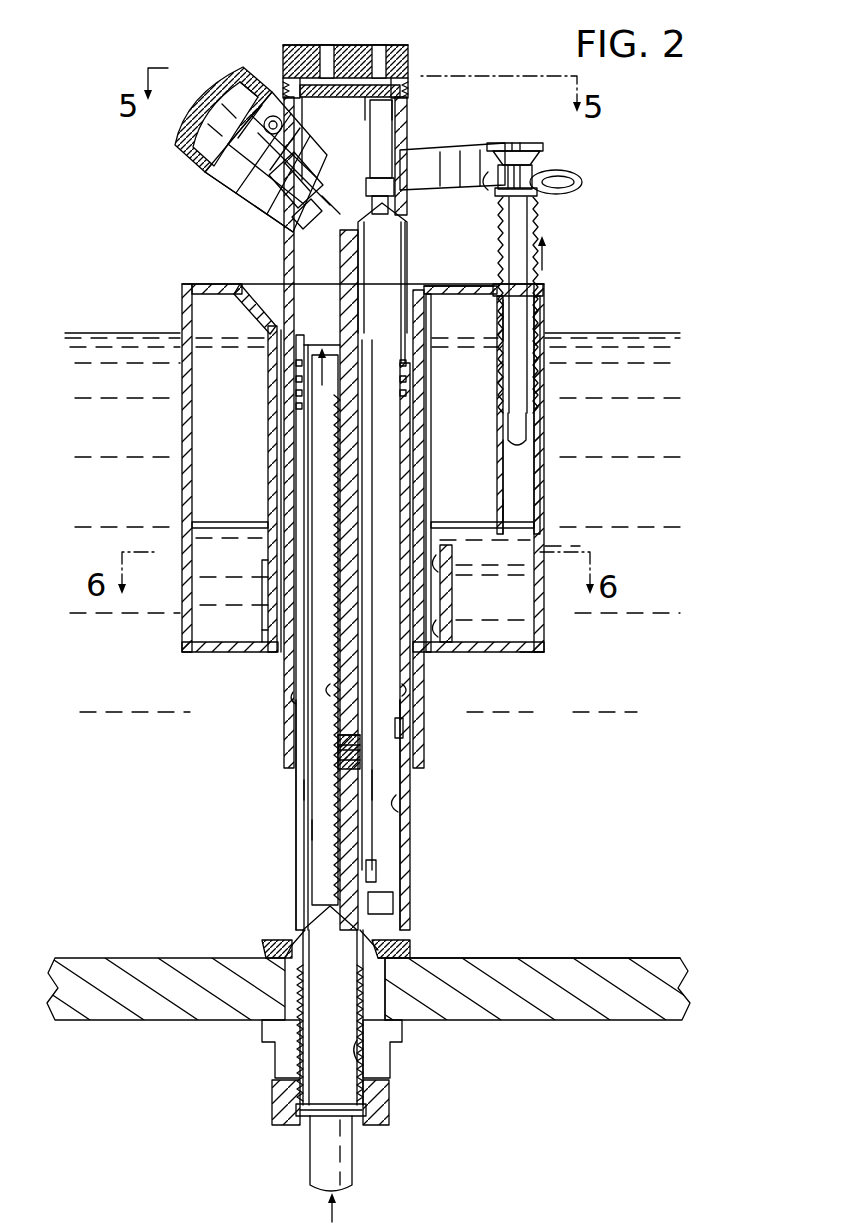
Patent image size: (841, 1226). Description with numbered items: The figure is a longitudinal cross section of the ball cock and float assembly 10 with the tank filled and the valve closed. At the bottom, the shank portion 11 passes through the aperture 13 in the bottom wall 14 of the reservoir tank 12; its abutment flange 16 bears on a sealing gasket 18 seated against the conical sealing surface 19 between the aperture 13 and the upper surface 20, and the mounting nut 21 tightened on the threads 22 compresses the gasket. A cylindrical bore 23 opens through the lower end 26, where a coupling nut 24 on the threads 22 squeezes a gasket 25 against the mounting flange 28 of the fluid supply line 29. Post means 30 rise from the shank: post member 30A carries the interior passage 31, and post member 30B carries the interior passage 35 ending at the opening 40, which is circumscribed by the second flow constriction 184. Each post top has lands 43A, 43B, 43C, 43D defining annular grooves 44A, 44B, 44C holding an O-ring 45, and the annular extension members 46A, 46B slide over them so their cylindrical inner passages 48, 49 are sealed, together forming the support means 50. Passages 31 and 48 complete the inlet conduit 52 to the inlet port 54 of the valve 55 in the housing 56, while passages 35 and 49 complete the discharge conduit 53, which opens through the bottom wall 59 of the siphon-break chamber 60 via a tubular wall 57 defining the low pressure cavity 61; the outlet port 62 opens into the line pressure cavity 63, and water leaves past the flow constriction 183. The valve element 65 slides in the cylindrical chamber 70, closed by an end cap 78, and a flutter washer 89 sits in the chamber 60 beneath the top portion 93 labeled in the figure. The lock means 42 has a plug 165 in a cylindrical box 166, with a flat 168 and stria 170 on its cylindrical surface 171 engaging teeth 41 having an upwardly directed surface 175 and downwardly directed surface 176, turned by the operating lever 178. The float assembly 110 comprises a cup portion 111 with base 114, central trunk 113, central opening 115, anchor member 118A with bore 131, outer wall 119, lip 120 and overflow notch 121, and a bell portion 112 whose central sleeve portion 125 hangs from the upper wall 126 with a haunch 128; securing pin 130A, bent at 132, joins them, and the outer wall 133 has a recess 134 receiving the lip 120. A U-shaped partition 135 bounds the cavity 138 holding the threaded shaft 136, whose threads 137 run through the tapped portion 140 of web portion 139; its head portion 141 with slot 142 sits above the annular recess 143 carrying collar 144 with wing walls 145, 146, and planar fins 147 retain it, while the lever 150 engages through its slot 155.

The ball cock and float assembly 10 is at (697, 244).
The shank portion 11 is at (388, 1002).
The reservoir tank 12 is at (120, 1020).
The aperture 13 is at (272, 965).
The bottom wall 14 is at (625, 1014).
The abutment flange 16 is at (268, 940).
The sealing gasket 18 is at (402, 955).
The conical sealing surface 19 is at (398, 970).
The upper surface 20 is at (615, 957).
The mounting nut 21 is at (376, 1042).
The threads 22 is at (282, 1045).
The cylindrical bore 23 is at (358, 1062).
The coupling nut 24 is at (272, 1093).
The gasket 25 is at (292, 1112).
The lower end 26 is at (390, 1116).
The mounting flange 28 is at (302, 1122).
The fluid supply line 29 is at (342, 1170).
The post means 30 is at (284, 818).
The post member 30A is at (294, 830).
The second post member 30B is at (408, 821).
The interior passage 31 is at (332, 852).
The interior passage 35 is at (398, 778).
The opening 40 is at (385, 906).
The teeth 41 is at (328, 688).
The lock means 42 is at (400, 742).
The land 43A is at (295, 407).
The land 43B is at (295, 394).
The land 43C is at (295, 380).
The land 43D is at (295, 365).
The annular groove 44A is at (407, 394).
The annular groove 44B is at (407, 380).
The annular groove 44C is at (407, 365).
The O-ring 45 is at (350, 335).
The annular extension member 46A is at (283, 668).
The annular extension member 46B is at (416, 668).
The cylindrical inner passage 48 is at (292, 696).
The cylindrical inner passage 49 is at (406, 690).
The support means 50 is at (490, 710).
The inlet conduit 52 is at (310, 790).
The discharge conduit 53 is at (390, 836).
The inlet port 54 is at (304, 226).
The valve 55 is at (192, 197).
The housing 56 is at (268, 214).
The tubular wall 57 is at (400, 110).
The bottom wall 59 is at (375, 130).
The siphon-break chamber 60 is at (322, 56).
The low pressure cavity 61 is at (388, 100).
The outlet port 62 is at (380, 182).
The line pressure cavity 63 is at (290, 92).
The valve element 65 is at (216, 165).
The cylindrical chamber 70 is at (243, 205).
The end cap 78 is at (183, 118).
The flutter washer 89 is at (366, 96).
The cap top 93 is at (384, 47).
The float assembly 110 is at (552, 486).
The cup portion 111 is at (544, 602).
The bell portion 112 is at (544, 325).
The central trunk 113 is at (266, 594).
The base 114 is at (522, 652).
The central opening 115 is at (266, 634).
The cylindrical anchor member 118A is at (446, 600).
The outer wall 119 is at (182, 618).
The lip 120 is at (536, 522).
The overflow notch 121 is at (500, 550).
The central sleeve portion 125 is at (266, 490).
The upper wall 126 is at (447, 284).
The haunch 128 is at (215, 294).
The securing pin 130A is at (470, 500).
The bore 131 is at (440, 628).
The bent pin end 132 is at (440, 566).
The outer wall 133 is at (182, 488).
The recess 134 is at (184, 526).
The U-shaped partition 135 is at (500, 462).
The threaded shaft 136 is at (528, 270).
The threads 137 is at (540, 233).
The cavity 138 is at (520, 507).
The web portion 139 is at (498, 305).
The tapped portion 140 is at (542, 306).
The head portion 141 is at (535, 142).
The slot 142 is at (514, 142).
The annular recess 143 is at (525, 192).
The collar 144 is at (532, 168).
The wing wall 145 is at (510, 178).
The wing wall 146 is at (548, 186).
The planar fins 147 is at (512, 442).
The lever 150 is at (428, 158).
The slot 155 is at (562, 180).
The plug 165 is at (402, 728).
The cylindrical box 166 is at (405, 800).
The flat 168 is at (336, 770).
The stria 170 is at (336, 752).
The cylindrical surface 171 is at (336, 722).
The upwardly directed surface 175 is at (335, 832).
The downwardly directed surface 176 is at (330, 877).
The operating lever 178 is at (336, 748).
The flow constriction 183 is at (385, 232).
The second flow constriction 184 is at (402, 876).